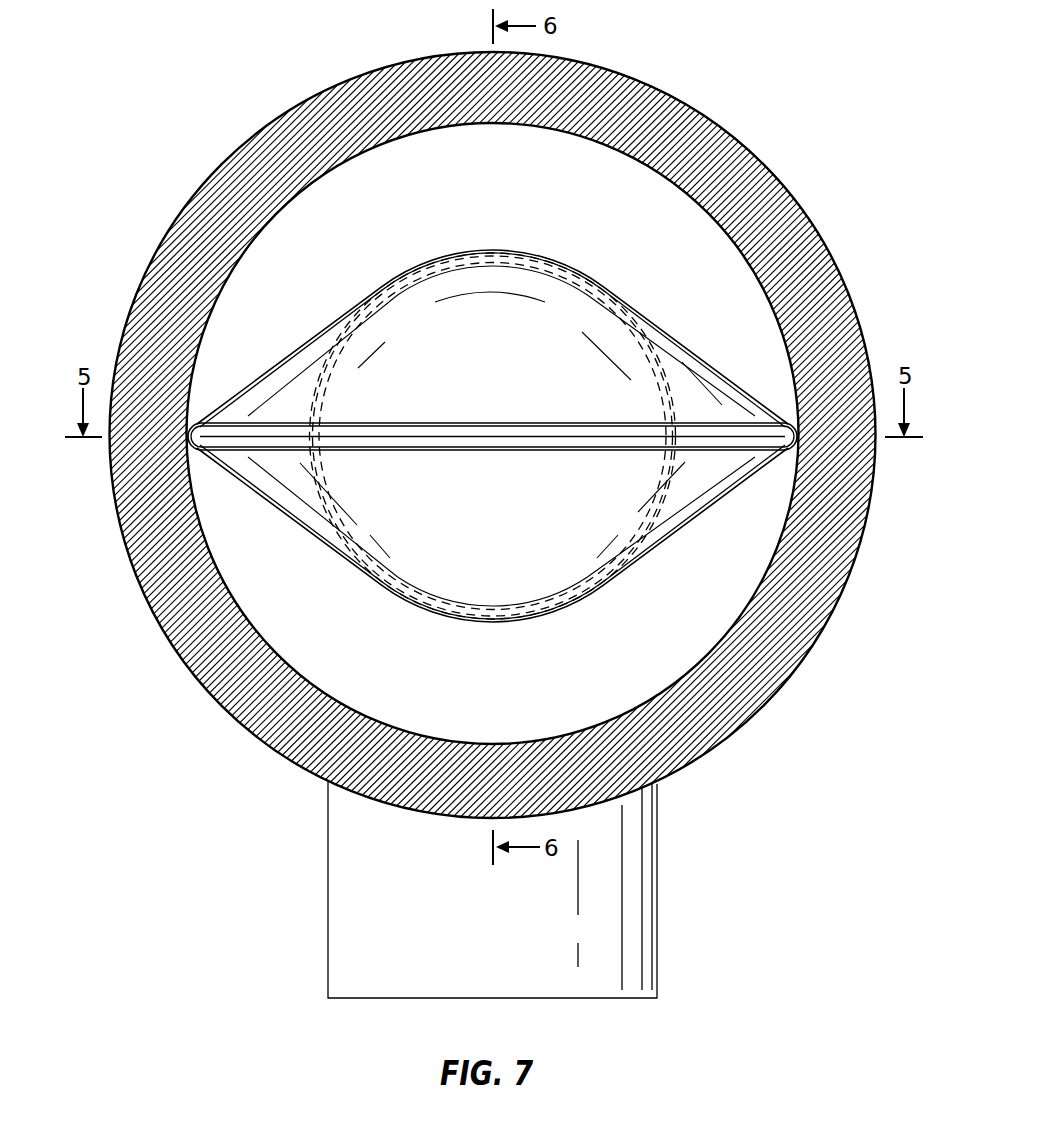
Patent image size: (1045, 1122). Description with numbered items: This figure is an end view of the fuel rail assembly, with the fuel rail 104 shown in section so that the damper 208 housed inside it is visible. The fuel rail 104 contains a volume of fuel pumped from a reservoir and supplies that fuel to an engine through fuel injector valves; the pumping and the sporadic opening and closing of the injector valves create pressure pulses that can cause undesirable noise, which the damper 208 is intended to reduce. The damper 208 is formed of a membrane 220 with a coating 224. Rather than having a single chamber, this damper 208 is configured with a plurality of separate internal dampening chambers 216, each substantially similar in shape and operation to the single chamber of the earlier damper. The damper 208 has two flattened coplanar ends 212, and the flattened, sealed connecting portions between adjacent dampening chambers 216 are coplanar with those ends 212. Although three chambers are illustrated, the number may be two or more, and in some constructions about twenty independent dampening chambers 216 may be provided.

The fuel rail 104 is at (670, 110).
The damper 208 is at (492, 407).
The flattened coplanar ends 212 is at (226, 421).
The dampening chambers 216 is at (323, 391).
The membrane 220 is at (492, 436).
The coating 224 is at (677, 366).